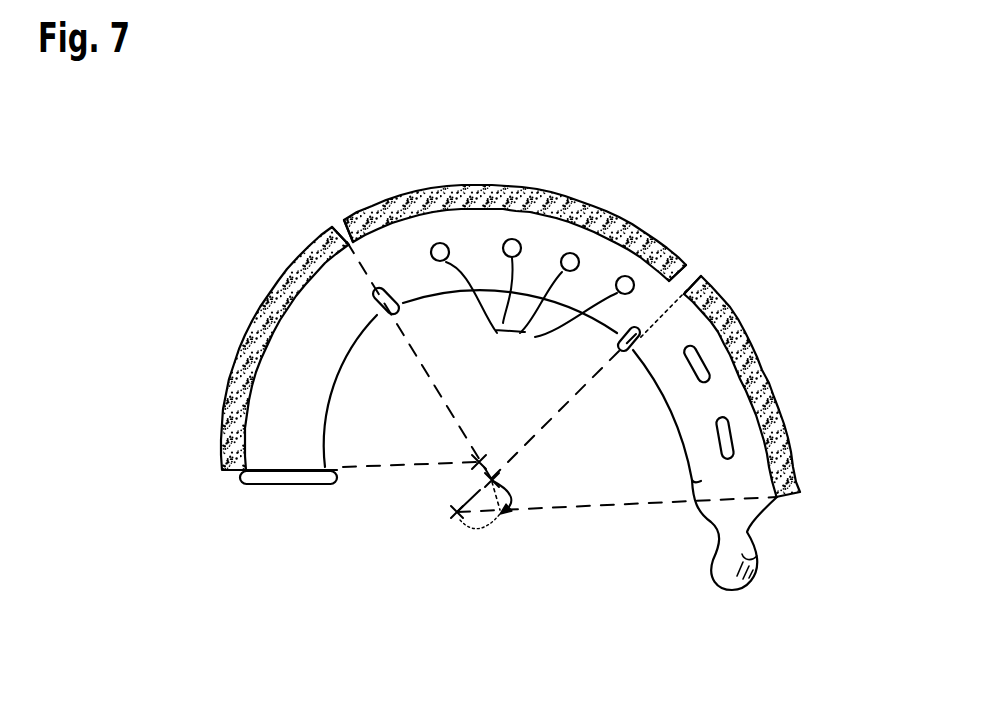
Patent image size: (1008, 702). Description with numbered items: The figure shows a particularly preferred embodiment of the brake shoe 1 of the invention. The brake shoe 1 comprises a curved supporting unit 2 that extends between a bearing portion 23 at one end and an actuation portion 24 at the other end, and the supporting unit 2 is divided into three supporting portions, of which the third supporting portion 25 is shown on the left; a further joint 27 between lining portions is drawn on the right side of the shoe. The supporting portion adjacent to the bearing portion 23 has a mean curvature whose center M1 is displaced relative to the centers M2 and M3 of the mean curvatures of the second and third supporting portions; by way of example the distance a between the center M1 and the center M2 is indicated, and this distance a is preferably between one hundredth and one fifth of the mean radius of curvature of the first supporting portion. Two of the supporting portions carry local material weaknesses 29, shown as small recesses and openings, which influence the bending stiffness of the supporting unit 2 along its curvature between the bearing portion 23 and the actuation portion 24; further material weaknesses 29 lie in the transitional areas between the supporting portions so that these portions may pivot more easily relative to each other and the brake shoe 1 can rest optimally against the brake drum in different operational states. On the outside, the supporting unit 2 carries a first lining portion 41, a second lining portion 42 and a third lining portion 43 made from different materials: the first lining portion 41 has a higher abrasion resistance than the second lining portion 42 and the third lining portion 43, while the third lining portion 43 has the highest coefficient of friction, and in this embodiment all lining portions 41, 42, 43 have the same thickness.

The brake shoe 1 is at (518, 152).
The supporting unit 2 is at (548, 237).
The bearing portion 23 is at (757, 553).
The actuation portion 24 is at (283, 474).
The third supporting portion 25 is at (338, 288).
The second joint between lining segments 27 is at (716, 312).
The material weaknesses 29 is at (407, 262).
The first lining portion 41 is at (765, 368).
The second lining portion 42 is at (605, 217).
The third lining portion 43 is at (268, 300).
The center of mean curvature of first supporting portion M1 is at (458, 522).
The center of mean curvature of second supporting portion M2 is at (512, 513).
The center of mean curvature of third supporting portion M3 is at (457, 513).
The distance a is at (500, 521).